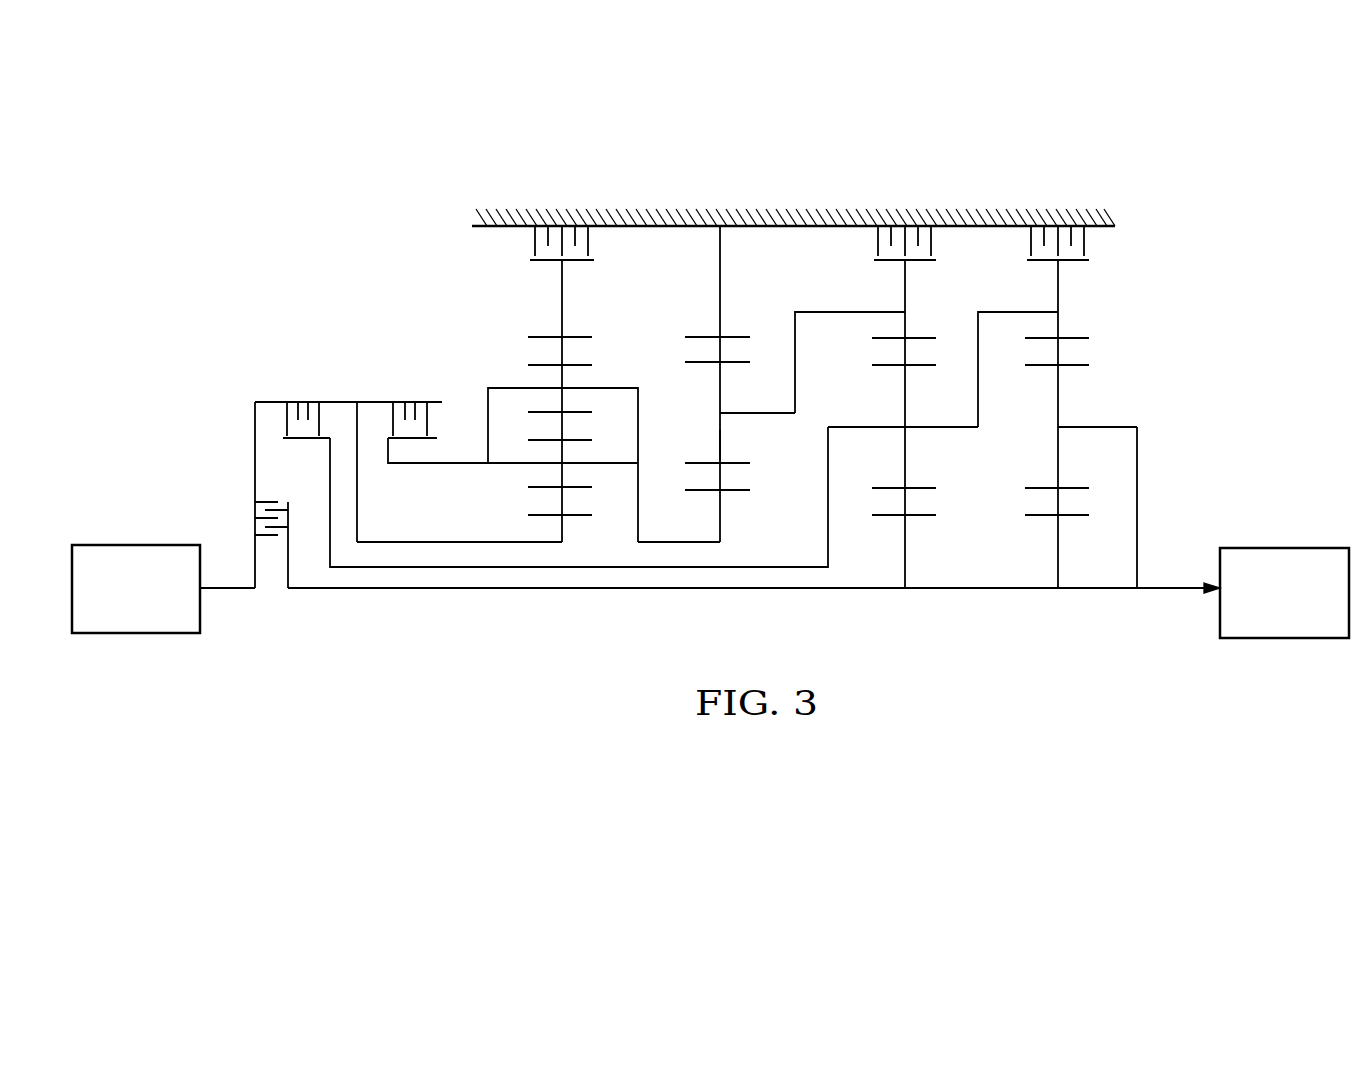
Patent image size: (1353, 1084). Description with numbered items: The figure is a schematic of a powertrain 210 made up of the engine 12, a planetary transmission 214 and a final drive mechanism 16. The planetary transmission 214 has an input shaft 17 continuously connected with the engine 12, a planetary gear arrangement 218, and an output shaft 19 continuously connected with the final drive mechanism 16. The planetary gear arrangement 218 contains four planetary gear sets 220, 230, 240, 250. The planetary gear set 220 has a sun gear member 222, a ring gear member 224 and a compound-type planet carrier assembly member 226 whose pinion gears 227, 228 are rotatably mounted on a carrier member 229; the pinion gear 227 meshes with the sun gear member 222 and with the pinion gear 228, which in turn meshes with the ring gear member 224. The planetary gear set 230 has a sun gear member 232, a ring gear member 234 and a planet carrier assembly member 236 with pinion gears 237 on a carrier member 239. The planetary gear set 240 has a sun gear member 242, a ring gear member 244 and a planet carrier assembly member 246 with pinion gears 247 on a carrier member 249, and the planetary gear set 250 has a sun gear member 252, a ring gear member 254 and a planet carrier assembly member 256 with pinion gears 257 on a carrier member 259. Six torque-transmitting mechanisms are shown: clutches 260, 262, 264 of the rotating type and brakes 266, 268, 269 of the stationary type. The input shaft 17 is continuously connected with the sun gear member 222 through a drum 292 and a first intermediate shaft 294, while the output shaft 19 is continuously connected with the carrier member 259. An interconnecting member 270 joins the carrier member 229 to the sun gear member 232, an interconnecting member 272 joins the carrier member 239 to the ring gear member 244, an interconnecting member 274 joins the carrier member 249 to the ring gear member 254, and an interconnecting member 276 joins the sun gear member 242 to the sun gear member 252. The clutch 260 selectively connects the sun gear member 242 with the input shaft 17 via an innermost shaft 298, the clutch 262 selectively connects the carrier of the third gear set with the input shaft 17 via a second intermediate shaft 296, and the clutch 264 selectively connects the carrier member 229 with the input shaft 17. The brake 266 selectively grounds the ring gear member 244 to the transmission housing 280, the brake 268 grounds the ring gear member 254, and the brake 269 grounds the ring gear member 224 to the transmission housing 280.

The engine 12 is at (140, 528).
The final drive mechanism 16 is at (1278, 532).
The input shaft 17 is at (223, 590).
The output shaft 19 is at (1178, 590).
The powertrain 210 is at (402, 324).
The planetary transmission 214 is at (436, 286).
The planetary gear arrangement 218 is at (473, 256).
The planetary gear set 220 is at (571, 522).
The sun gear member 222 is at (583, 518).
The ring gear member 224 is at (583, 337).
The planet carrier assembly member 226 is at (613, 356).
The pinion gear 227 is at (560, 476).
The pinion gear 228 is at (560, 376).
The carrier member 229 is at (618, 388).
The planetary gear set 230 is at (733, 503).
The sun gear member 232 is at (742, 492).
The ring gear member 234 is at (737, 337).
The planet carrier assembly member 236 is at (703, 396).
The pinion gears 237 is at (720, 445).
The carrier member 239 is at (760, 412).
The planetary gear set 240 is at (918, 523).
The sun gear member 242 is at (930, 518).
The ring gear member 244 is at (922, 338).
The planet carrier assembly member 246 is at (870, 406).
The pinion gears 247 is at (905, 466).
The carrier member 249 is at (935, 425).
The planetary gear set 250 is at (1067, 524).
The sun gear member 252 is at (1077, 518).
The ring gear member 254 is at (1075, 338).
The planet carrier assembly member 256 is at (1043, 416).
The pinion gears 257 is at (1058, 466).
The carrier member 259 is at (1108, 425).
The clutch 260 is at (272, 494).
The clutch 262 is at (274, 418).
The clutch 264 is at (382, 418).
The brake 266 is at (945, 245).
The brake 268 is at (1097, 245).
The brake 269 is at (525, 244).
The interconnecting member 270 is at (687, 543).
The interconnecting member 272 is at (830, 312).
The interconnecting member 274 is at (1000, 312).
The interconnecting member 276 is at (1022, 592).
The transmission housing 280 is at (860, 210).
The drum 292 is at (337, 402).
The first intermediate shaft 294 is at (437, 543).
The second intermediate shaft 296 is at (475, 568).
The innermost shaft 298 is at (525, 590).